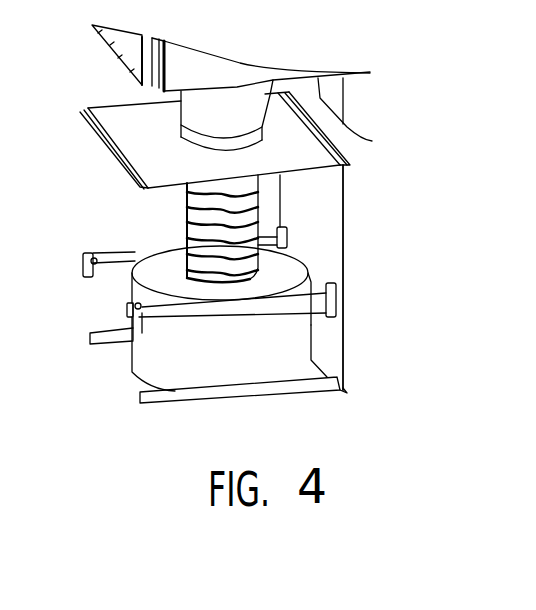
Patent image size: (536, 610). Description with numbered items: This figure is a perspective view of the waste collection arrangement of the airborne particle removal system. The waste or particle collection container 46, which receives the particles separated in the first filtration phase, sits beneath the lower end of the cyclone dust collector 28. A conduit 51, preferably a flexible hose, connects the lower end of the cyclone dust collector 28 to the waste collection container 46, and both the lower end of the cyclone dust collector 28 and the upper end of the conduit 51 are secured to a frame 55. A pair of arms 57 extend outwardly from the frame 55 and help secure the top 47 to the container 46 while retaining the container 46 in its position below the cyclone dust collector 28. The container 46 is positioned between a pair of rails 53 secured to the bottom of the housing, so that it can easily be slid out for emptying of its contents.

The cyclone dust collector 28 is at (198, 107).
The waste collection container 46 is at (148, 362).
The top 47 is at (300, 266).
The conduit 51 is at (203, 230).
The rails 53 is at (95, 332).
The frame 55 is at (343, 197).
The arms 57 is at (102, 252).